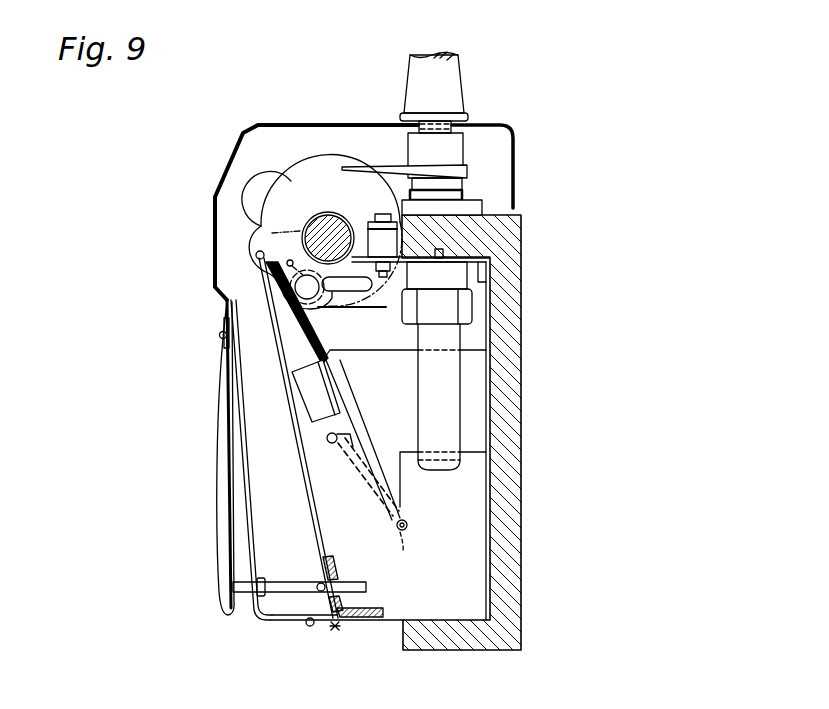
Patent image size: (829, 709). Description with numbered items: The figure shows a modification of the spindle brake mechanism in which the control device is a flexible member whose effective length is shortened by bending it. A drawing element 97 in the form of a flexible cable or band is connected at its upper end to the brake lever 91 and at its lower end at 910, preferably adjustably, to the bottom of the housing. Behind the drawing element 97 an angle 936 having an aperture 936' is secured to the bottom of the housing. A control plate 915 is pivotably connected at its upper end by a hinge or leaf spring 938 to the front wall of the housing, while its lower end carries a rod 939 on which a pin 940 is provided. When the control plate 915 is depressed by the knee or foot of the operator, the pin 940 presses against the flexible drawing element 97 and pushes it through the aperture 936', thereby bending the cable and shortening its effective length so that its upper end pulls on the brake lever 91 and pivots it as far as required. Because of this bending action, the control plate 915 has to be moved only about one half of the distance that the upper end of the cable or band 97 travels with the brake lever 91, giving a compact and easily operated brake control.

The brake lever 91 is at (293, 222).
The drawing element 97 is at (283, 372).
The leaf spring 938 is at (227, 345).
The control plate 915 is at (226, 588).
The rod 939 is at (280, 588).
The pin 940 is at (321, 592).
The lower end connection 910 is at (336, 630).
The angle 936 is at (353, 653).
The aperture 936' is at (364, 584).